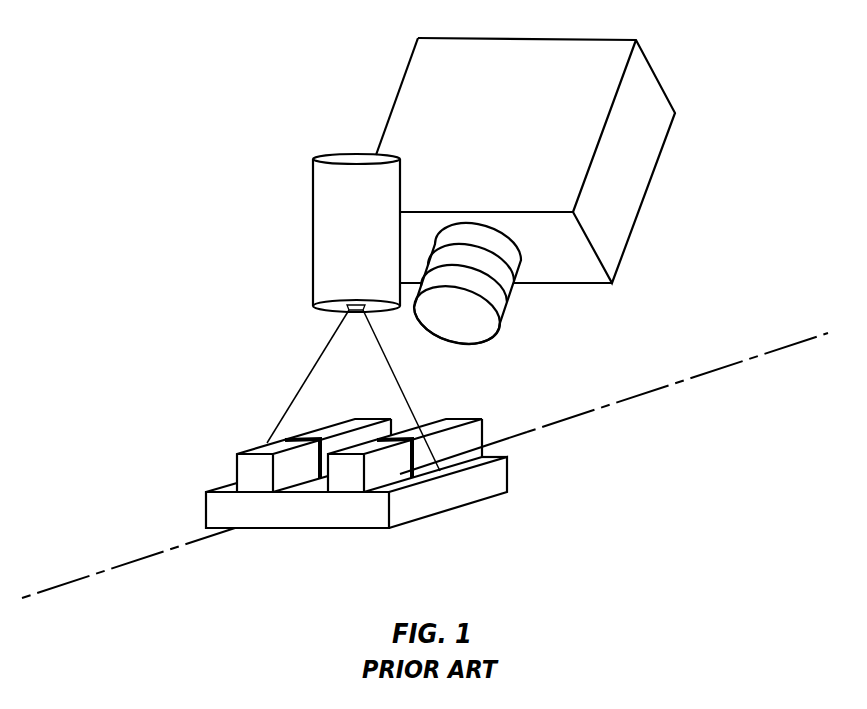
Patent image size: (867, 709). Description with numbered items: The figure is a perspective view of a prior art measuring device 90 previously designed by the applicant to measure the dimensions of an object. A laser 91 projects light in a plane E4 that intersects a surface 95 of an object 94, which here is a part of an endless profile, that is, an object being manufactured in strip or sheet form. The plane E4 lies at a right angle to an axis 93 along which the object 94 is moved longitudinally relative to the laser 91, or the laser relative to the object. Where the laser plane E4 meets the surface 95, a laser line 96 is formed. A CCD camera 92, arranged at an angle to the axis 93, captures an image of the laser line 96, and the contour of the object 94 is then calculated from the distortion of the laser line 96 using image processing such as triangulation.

The prior art laser processing system 90 is at (287, 73).
The laser 91 is at (327, 265).
The CCD camera 92 is at (643, 165).
The axis 93 is at (653, 392).
The object 94 is at (222, 507).
The surface 95 is at (263, 450).
The laser line 96 is at (413, 462).
The plane E4 is at (323, 370).